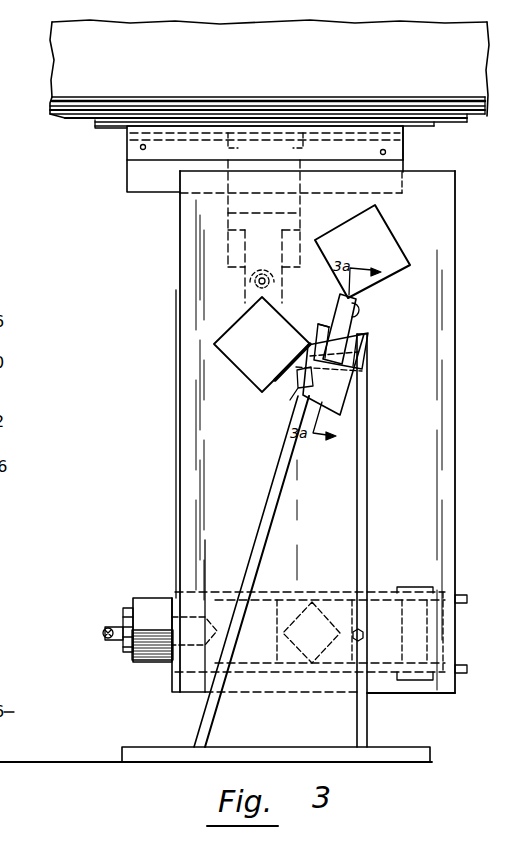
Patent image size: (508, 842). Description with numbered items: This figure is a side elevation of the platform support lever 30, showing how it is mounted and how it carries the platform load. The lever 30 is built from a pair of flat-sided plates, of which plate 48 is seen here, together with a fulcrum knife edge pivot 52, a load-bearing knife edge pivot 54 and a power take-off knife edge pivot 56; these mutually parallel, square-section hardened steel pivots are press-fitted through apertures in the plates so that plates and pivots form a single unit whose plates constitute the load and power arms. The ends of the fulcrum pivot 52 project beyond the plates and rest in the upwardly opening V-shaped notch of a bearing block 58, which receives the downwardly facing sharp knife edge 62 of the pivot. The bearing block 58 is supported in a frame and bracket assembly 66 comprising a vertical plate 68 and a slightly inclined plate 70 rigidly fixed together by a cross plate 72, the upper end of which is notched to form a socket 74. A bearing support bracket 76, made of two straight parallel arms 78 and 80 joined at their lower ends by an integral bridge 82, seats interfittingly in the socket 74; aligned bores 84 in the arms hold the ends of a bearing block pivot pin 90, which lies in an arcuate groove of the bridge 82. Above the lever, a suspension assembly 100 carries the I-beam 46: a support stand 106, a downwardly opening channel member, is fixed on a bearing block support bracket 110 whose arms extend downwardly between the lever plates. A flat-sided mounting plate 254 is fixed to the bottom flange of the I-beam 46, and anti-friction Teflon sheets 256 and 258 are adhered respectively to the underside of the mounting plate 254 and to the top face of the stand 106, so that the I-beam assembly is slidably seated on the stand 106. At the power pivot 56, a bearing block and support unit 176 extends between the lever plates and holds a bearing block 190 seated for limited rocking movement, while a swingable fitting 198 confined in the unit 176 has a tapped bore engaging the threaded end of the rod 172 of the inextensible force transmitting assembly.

The I-beam 46 is at (52, 30).
The mounting plate 254 is at (55, 117).
The anti-friction Teflon sheet 256 is at (95, 125).
The suspension assembly 100 is at (110, 143).
The anti-friction Teflon sheet 258 is at (138, 136).
The support stand 106 is at (408, 157).
The flat-sided plate 48 is at (456, 199).
The fulcrum knife edge pivot 52 is at (404, 246).
The bearing block support bracket 110 is at (228, 243).
The lever 30 is at (158, 322).
The load-bearing knife edge pivot 54 is at (214, 345).
The bore 84 is at (296, 358).
The arm 78 is at (320, 325).
The bearing block 58 is at (358, 305).
The knife edge 62 is at (357, 314).
The arm 80 is at (370, 352).
The bridge 82 is at (350, 389).
The bearing block pivot pin 90 is at (305, 370).
The socket 74 is at (298, 388).
The frame and bracket assembly 66 is at (376, 425).
The plate 70 is at (266, 468).
The bearing support bracket 76 is at (339, 422).
The cross plate 72 is at (338, 494).
The plate 68 is at (368, 480).
The fitting 198 is at (148, 598).
The rod 172 is at (110, 622).
The bearing block and support unit 176 is at (142, 668).
The power take-off knife edge pivot 56 is at (345, 572).
The bearing block 190 is at (345, 568).